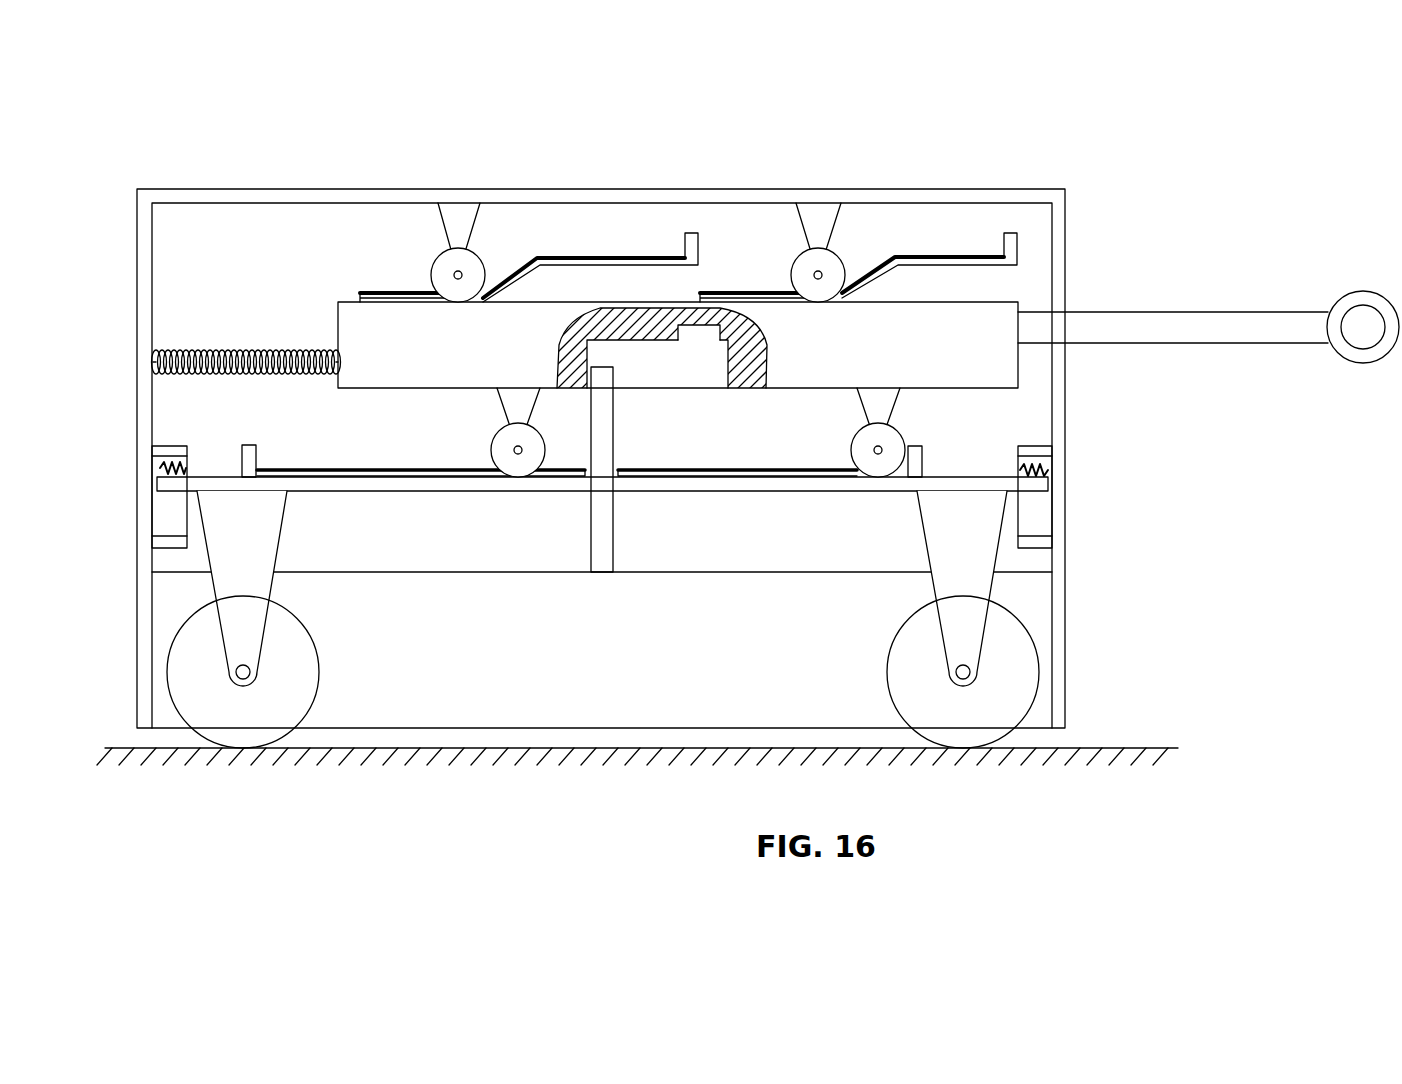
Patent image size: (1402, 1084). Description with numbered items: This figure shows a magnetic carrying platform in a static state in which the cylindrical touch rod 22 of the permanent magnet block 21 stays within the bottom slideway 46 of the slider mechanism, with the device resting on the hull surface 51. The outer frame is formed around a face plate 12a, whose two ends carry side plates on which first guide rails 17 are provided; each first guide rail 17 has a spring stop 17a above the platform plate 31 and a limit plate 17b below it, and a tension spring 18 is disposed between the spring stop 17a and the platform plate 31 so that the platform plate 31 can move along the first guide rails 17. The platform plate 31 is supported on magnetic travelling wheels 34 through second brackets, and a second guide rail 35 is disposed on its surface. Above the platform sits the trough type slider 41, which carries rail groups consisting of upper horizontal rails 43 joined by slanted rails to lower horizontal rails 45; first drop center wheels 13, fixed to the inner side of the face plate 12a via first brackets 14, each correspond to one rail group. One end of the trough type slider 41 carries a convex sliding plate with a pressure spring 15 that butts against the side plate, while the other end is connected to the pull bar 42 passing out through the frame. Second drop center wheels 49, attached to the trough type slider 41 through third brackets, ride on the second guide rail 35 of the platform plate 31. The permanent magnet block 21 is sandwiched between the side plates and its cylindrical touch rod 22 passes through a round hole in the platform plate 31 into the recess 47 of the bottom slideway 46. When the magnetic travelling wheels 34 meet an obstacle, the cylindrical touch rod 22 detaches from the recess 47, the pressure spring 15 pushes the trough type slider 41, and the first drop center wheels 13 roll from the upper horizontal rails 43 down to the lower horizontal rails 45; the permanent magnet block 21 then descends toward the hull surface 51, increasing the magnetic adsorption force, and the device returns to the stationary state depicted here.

The face plate 12a is at (933, 195).
The first drop center wheels 13 is at (803, 272).
The first brackets 14 is at (453, 218).
The pressure spring 15 is at (263, 352).
The first guide rails 17 is at (1037, 520).
The spring stop 17a is at (160, 468).
The limit plate 17b is at (163, 545).
The tension spring 18 is at (1045, 470).
The permanent magnet block 21 is at (480, 678).
The cylindrical touch rod 22 is at (600, 517).
The platform plate 31 is at (780, 483).
The magnetic travelling wheels 34 is at (298, 672).
The second guide rail 35 is at (330, 473).
The trough type slider 41 is at (958, 312).
The pull bar 42 is at (1267, 330).
The upper horizontal rails 43 is at (618, 255).
The lower horizontal rails 45 is at (380, 292).
The bottom slideway 46 is at (640, 353).
The recess 47 is at (695, 335).
The second drop center wheels 49 is at (500, 450).
The hull surface 51 is at (1127, 748).